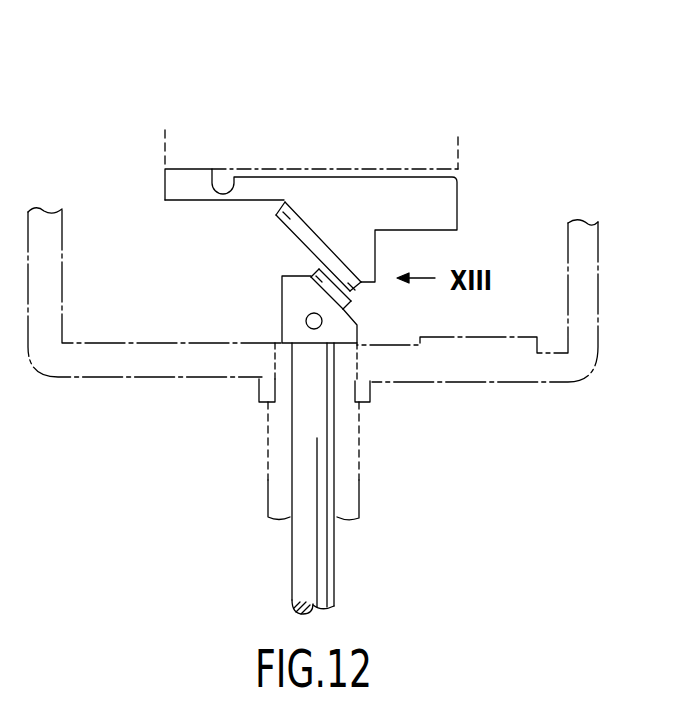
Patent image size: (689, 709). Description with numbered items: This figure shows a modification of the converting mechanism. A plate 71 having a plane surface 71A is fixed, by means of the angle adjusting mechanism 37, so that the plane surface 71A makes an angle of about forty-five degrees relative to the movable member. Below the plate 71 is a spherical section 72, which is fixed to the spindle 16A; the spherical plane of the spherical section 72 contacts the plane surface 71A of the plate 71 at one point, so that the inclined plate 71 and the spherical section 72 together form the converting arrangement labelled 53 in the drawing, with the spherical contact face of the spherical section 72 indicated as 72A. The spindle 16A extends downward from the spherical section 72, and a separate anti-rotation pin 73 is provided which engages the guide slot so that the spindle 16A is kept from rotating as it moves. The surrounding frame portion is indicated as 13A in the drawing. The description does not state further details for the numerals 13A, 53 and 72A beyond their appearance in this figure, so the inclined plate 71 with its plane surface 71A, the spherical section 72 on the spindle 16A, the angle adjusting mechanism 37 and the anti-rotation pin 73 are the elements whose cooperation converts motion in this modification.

The frame 13A is at (437, 381).
The angle adjusting mechanism 37 is at (452, 200).
The latch assembly 53 is at (278, 267).
The plate 71 is at (269, 246).
The plane surface 71A is at (312, 258).
The spherical section 72 is at (301, 300).
The end face of second latch bar 72A is at (355, 295).
The anti-rotation pin 73 is at (306, 319).
The spindle 16A is at (323, 577).